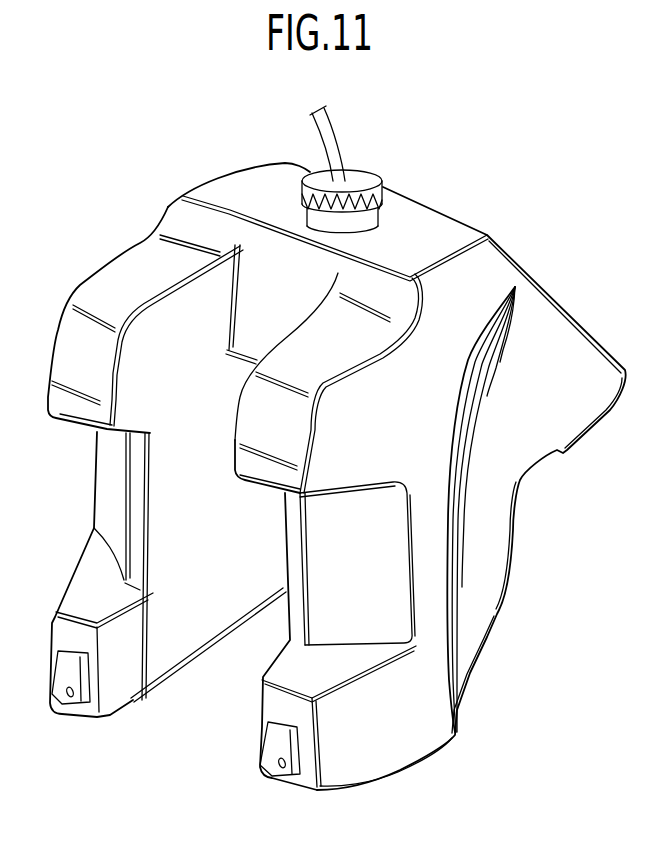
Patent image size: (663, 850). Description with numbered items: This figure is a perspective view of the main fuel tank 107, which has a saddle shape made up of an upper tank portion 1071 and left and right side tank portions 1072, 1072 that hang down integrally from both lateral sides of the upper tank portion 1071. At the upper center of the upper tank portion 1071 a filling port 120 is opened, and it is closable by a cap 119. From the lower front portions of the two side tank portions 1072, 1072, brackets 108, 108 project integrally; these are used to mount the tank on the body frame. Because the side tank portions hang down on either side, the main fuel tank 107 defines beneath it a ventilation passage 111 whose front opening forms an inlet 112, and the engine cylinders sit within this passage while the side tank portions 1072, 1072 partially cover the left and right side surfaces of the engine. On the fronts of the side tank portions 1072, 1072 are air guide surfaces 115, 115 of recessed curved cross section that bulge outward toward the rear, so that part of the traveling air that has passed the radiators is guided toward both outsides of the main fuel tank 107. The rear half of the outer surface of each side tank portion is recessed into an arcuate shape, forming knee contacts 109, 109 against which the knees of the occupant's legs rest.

The main fuel tank 107 is at (420, 198).
The upper tank portion 1071 is at (287, 317).
The side tank portion 1072 is at (168, 405).
The bracket 108 is at (62, 704).
The knee contact 109 is at (520, 458).
The ventilation passage 111 is at (284, 606).
The inlet 112 is at (158, 700).
The air guide surface 115 is at (131, 498).
The cap 119 is at (362, 177).
The filling port 120 is at (361, 217).